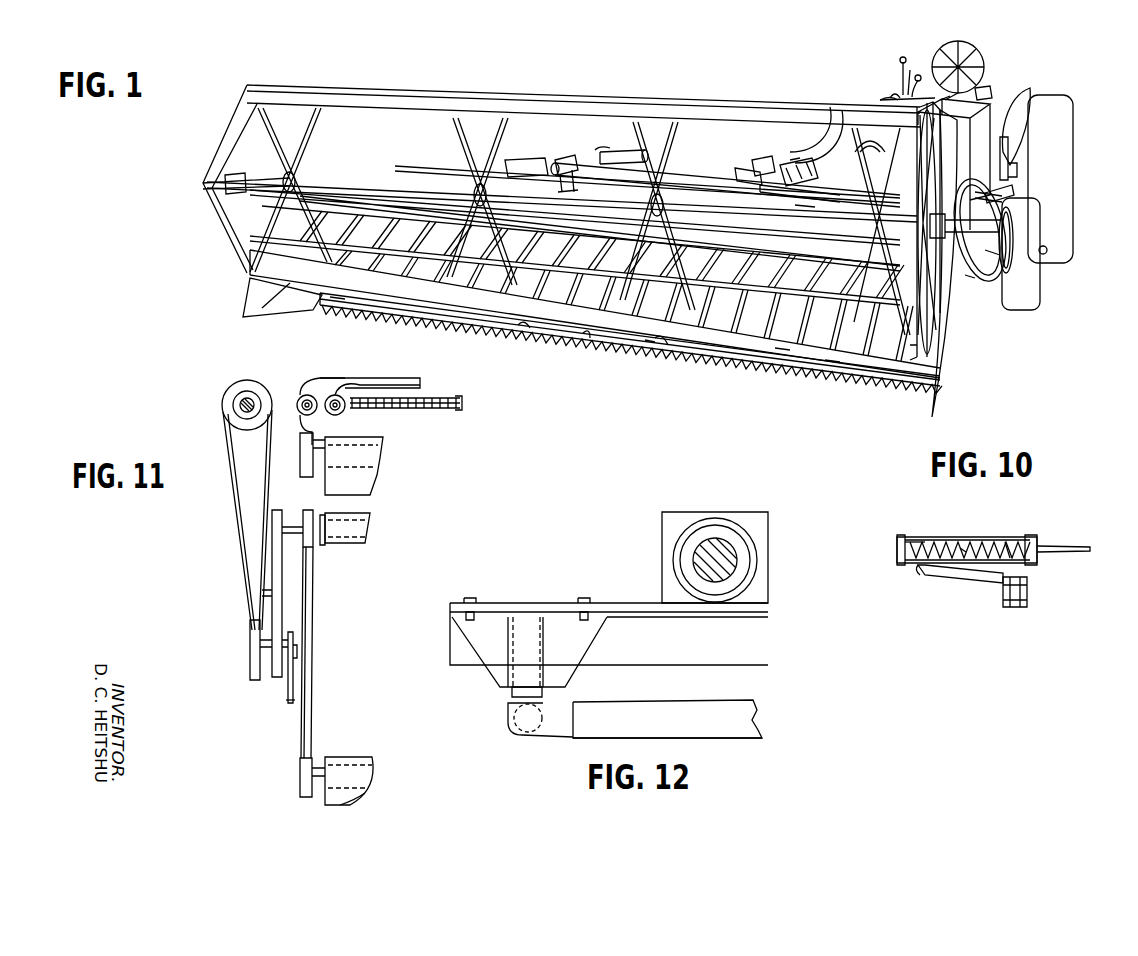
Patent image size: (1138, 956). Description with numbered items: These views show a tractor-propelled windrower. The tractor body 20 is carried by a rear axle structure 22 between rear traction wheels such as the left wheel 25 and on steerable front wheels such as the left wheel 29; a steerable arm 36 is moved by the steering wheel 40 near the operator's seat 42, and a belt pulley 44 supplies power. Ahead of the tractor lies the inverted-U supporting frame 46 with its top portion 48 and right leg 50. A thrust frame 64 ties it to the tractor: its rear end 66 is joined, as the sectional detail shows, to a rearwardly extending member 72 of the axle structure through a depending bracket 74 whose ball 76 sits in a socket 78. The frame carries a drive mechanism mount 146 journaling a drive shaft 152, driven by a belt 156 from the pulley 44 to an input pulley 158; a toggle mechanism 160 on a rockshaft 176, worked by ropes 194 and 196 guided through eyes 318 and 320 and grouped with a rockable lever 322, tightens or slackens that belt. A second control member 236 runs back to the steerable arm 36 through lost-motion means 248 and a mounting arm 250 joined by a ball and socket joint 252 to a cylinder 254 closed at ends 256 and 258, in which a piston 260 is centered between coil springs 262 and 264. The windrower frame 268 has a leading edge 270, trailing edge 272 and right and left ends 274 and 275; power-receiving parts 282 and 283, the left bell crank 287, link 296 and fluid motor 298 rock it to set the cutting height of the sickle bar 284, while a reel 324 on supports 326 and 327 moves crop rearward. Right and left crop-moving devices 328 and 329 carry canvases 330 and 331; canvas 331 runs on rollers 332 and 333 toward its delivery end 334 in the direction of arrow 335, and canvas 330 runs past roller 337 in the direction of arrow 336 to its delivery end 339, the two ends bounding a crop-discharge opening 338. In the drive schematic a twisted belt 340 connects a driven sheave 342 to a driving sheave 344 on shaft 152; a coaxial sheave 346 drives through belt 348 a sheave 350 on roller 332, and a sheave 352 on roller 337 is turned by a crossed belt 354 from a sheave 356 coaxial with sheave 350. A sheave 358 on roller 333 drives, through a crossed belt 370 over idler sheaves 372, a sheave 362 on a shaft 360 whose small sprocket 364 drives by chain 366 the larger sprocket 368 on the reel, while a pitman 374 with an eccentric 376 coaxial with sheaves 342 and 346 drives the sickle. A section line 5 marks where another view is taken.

In FIG. 1, the section line 5 is at (768, 272).
In FIG. 1, the tractor body 20 is at (978, 102).
In FIG. 1, the rear axle structure 22 is at (1017, 172).
In FIG. 12, the rear axle structure 22 is at (756, 518).
In FIG. 1, the left-hand rear traction wheel 25 is at (1074, 110).
In FIG. 1, the left-hand steerable wheel 29 is at (1028, 293).
In FIG. 10, the steerable arm 36 is at (1027, 594).
In FIG. 1, the steering wheel 40 is at (969, 51).
In FIG. 1, the operator's seat 42 is at (984, 88).
In FIG. 1, the belt pulley 44 is at (876, 139).
In FIG. 1, the harvester-supporting frame 46 is at (536, 154).
In FIG. 1, the top portion 48 is at (700, 178).
In FIG. 1, the right depending leg 50 is at (535, 177).
In FIG. 12, the thrust frame 64 is at (774, 722).
In FIG. 12, the rear end of thrust frame 66 is at (748, 733).
In FIG. 12, the rearwardly extending member 72 is at (637, 608).
In FIG. 12, the depending bracket 74 is at (489, 672).
In FIG. 12, the ball 76 is at (520, 700).
In FIG. 12, the socket 78 is at (510, 725).
In FIG. 1, the drive mechanism mount 146 is at (808, 214).
In FIG. 11, the drive shaft 152 is at (239, 405).
In FIG. 1, the drive belt 156 is at (828, 150).
In FIG. 1, the input pulley 158 is at (800, 172).
In FIG. 1, the over-center toggle mechanism 160 is at (801, 148).
In FIG. 1, the rockshaft 176 is at (817, 186).
In FIG. 1, the upper rope 194 is at (895, 100).
In FIG. 1, the lower rope 196 is at (918, 76).
In FIG. 10, the second control member 236 is at (1086, 546).
In FIG. 10, the lost-motion means 248 is at (918, 529).
In FIG. 10, the mounting arm 250 is at (965, 581).
In FIG. 10, the ball and socket joint 252 is at (919, 570).
In FIG. 10, the cylinder 254 is at (990, 541).
In FIG. 10, the rear end closure 256 is at (897, 550).
In FIG. 10, the front end closure 258 is at (1036, 545).
In FIG. 10, the piston 260 is at (962, 546).
In FIG. 10, the front coil spring 262 is at (1011, 540).
In FIG. 10, the rear coil spring 264 is at (927, 540).
In FIG. 1, the harvester frame 268 is at (971, 368).
In FIG. 1, the front leading edge portion 270 is at (586, 340).
In FIG. 1, the rear trailing edge portion 272 is at (415, 190).
In FIG. 1, the right-hand end 274 is at (272, 294).
In FIG. 1, the left-hand end 275 is at (950, 330).
In FIG. 1, the right power-receiving part 282 is at (560, 166).
In FIG. 1, the left power-receiving part 283 is at (760, 160).
In FIG. 1, the sickle bar 284 is at (650, 347).
In FIG. 1, the left-hand bell crank 287 is at (757, 177).
In FIG. 1, the transverse link 296 is at (665, 156).
In FIG. 1, the fluid motor 298 is at (623, 144).
In FIG. 1, the eye 318 is at (900, 62).
In FIG. 1, the eye 320 is at (938, 80).
In FIG. 1, the rockable lever 322 is at (909, 68).
In FIG. 1, the reel 324 is at (294, 68).
In FIG. 1, the right-hand reel support 326 is at (362, 193).
In FIG. 1, the left-hand reel support 327 is at (970, 285).
In FIG. 1, the right crop-moving device 328 is at (400, 310).
In FIG. 11, the right crop-moving device 328 is at (374, 788).
In FIG. 1, the left crop-moving device 329 is at (781, 352).
In FIG. 11, the left crop-moving device 329 is at (382, 496).
In FIG. 1, the endless canvas 330 is at (345, 301).
In FIG. 11, the endless canvas 330 is at (346, 797).
In FIG. 1, the endless canvas 331 is at (831, 363).
In FIG. 11, the endless canvas 331 is at (376, 480).
In FIG. 11, the right roller 332 is at (322, 545).
In FIG. 11, the left roller 333 is at (319, 455).
In FIG. 1, the delivery end 334 is at (660, 347).
In FIG. 1, the arrow 335 is at (853, 281).
In FIG. 1, the arrow 336 is at (404, 233).
In FIG. 11, the left roller 337 is at (325, 760).
In FIG. 1, the crop-discharge opening 338 is at (612, 259).
In FIG. 1, the delivery end 339 is at (522, 335).
In FIG. 11, the twisted belt 340 is at (247, 497).
In FIG. 11, the driven sheave 342 is at (250, 640).
In FIG. 11, the driving sheave 344 is at (223, 415).
In FIG. 11, the second sheave 346 is at (278, 672).
In FIG. 11, the belt 348 is at (272, 593).
In FIG. 11, the sheave 350 is at (272, 540).
In FIG. 11, the sheave 352 is at (302, 797).
In FIG. 11, the crossed belt 354 is at (313, 633).
In FIG. 11, the sheave 356 is at (305, 515).
In FIG. 11, the sheave 358 is at (305, 455).
In FIG. 1, the transverse shaft 360 is at (980, 257).
In FIG. 11, the transverse shaft 360 is at (370, 385).
In FIG. 1, the sheave 362 is at (1013, 231).
In FIG. 11, the sheave 362 is at (340, 385).
In FIG. 11, the small sprocket 364 is at (362, 407).
In FIG. 1, the drive chain 366 is at (970, 275).
In FIG. 11, the drive chain 366 is at (450, 398).
In FIG. 1, the larger sprocket 368 is at (965, 282).
In FIG. 1, the crossed belt 370 is at (1010, 211).
In FIG. 11, the crossed belt 370 is at (303, 430).
In FIG. 1, the idler sheaves 372 is at (1012, 208).
In FIG. 11, the idler sheaves 372 is at (306, 394).
In FIG. 11, the pitman 374 is at (290, 702).
In FIG. 11, the eccentric 376 is at (294, 648).